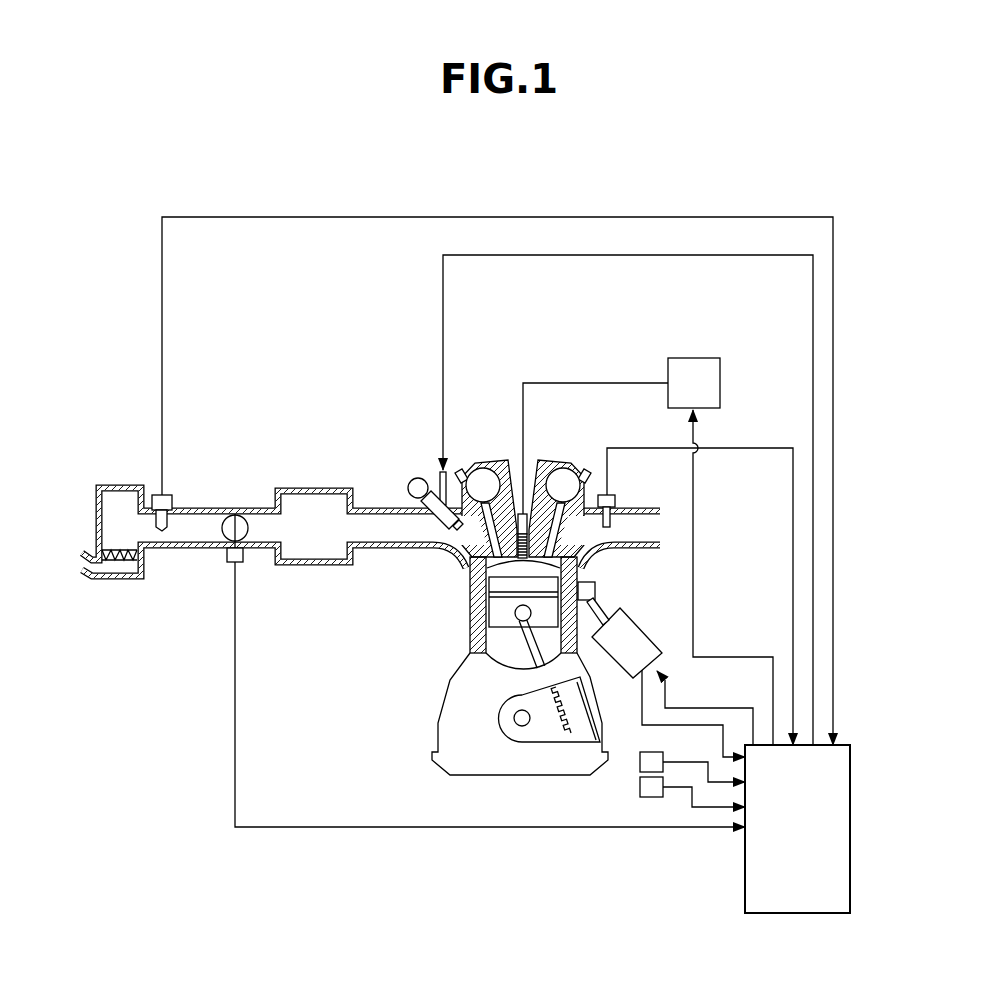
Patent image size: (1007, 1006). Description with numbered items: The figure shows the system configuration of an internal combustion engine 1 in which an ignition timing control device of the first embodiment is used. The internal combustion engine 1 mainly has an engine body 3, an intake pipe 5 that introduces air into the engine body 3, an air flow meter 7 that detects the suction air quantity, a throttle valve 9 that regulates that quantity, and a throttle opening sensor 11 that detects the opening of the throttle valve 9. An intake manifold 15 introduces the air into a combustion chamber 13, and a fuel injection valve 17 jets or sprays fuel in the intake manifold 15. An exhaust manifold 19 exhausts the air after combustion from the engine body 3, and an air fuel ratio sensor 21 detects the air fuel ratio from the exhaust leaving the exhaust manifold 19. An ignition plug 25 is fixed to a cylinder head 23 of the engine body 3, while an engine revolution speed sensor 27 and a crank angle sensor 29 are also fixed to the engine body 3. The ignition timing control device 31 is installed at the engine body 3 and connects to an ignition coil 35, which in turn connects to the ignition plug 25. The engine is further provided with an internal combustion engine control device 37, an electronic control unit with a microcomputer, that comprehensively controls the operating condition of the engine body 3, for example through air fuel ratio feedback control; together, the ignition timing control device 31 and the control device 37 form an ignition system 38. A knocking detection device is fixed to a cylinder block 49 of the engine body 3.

The internal combustion engine 1 is at (410, 383).
The engine body 3 is at (456, 584).
The intake pipe 5 is at (193, 508).
The air flow meter 7 is at (152, 500).
The throttle valve 9 is at (247, 527).
The throttle opening sensor 11 is at (242, 563).
The combustion chamber 13 is at (515, 568).
The intake manifold 15 is at (460, 535).
The fuel injection valve 17 is at (435, 495).
The exhaust manifold 19 is at (627, 530).
The air fuel ratio sensor 21 is at (613, 495).
The cylinder head 23 is at (502, 460).
The ignition plug 25 is at (532, 470).
The engine revolution speed sensor 27 is at (640, 760).
The crank angle sensor 29 is at (640, 788).
The ignition timing control device 31 is at (630, 603).
The ignition coil 35 is at (692, 358).
The internal combustion engine control device 37 is at (795, 915).
The ignition system 38 is at (840, 654).
The cylinder block 49 is at (572, 577).